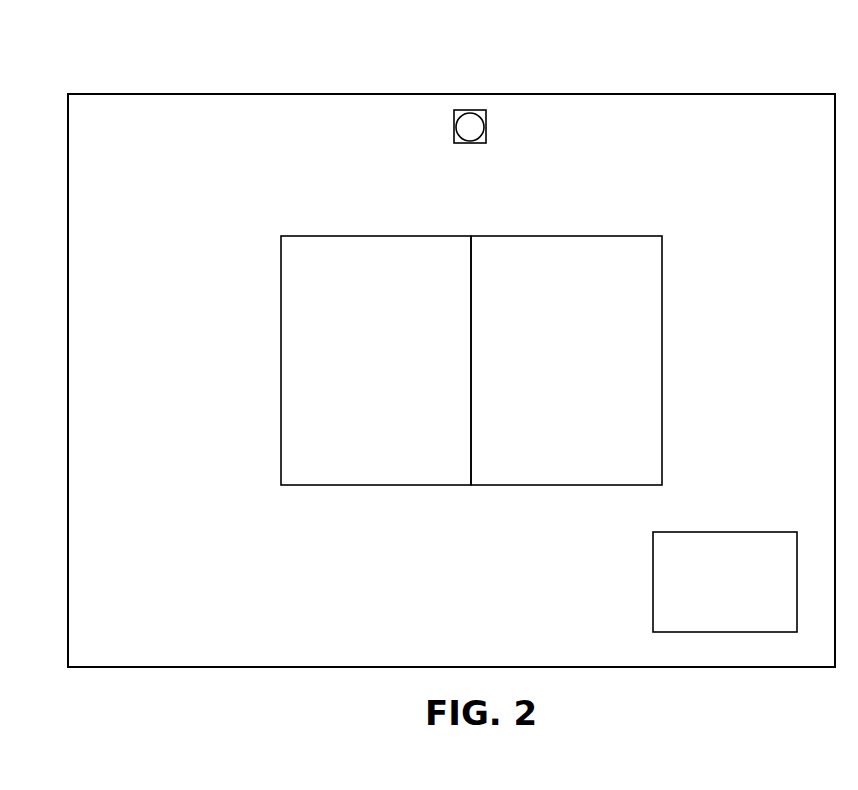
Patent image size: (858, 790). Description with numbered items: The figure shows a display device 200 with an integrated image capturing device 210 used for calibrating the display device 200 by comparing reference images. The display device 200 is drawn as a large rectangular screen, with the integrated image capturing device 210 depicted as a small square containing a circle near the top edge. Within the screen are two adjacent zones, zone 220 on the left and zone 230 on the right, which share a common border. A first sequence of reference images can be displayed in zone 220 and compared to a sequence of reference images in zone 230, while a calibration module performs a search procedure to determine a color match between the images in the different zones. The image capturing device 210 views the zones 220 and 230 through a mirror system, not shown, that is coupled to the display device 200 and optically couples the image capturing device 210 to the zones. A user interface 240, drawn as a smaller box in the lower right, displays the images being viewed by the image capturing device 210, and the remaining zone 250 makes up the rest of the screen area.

The display device 200 is at (680, 94).
The integrated image capturing device 210 is at (473, 112).
The zone 220 is at (376, 360).
The zone 230 is at (566, 360).
The user interface 240 is at (725, 582).
The remaining zone 250 is at (198, 551).